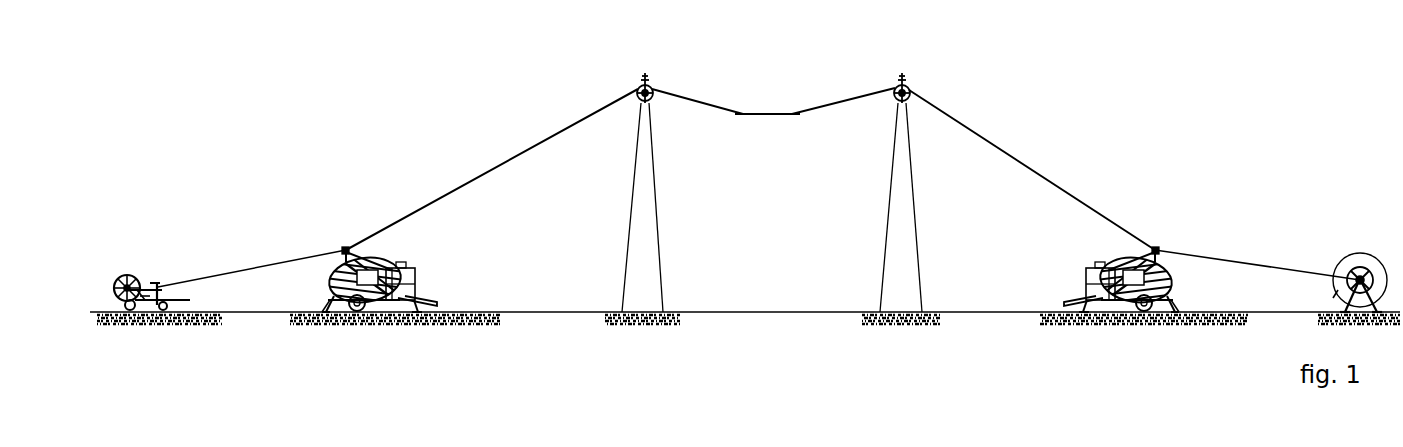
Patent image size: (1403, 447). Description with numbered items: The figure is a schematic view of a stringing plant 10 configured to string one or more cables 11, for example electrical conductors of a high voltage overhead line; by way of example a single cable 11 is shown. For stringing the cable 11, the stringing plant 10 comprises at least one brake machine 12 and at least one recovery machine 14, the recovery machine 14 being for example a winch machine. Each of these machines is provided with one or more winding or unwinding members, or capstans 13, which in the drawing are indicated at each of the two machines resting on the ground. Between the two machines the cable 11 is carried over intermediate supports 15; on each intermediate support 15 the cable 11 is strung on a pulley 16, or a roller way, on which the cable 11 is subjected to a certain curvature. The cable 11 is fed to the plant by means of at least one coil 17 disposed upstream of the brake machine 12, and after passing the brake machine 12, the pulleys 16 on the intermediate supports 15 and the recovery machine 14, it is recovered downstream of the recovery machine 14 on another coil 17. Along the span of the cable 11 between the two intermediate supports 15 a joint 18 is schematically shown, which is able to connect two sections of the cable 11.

The stringing plant 10 is at (745, 206).
The cable 11 is at (557, 128).
The brake machine 12 is at (1152, 243).
The capstan 13 is at (347, 326).
The recovery machine 14 is at (348, 231).
The intermediate support 15 is at (661, 247).
The pulley 16 is at (658, 106).
The coil 17 is at (143, 266).
The joint 18 is at (759, 108).